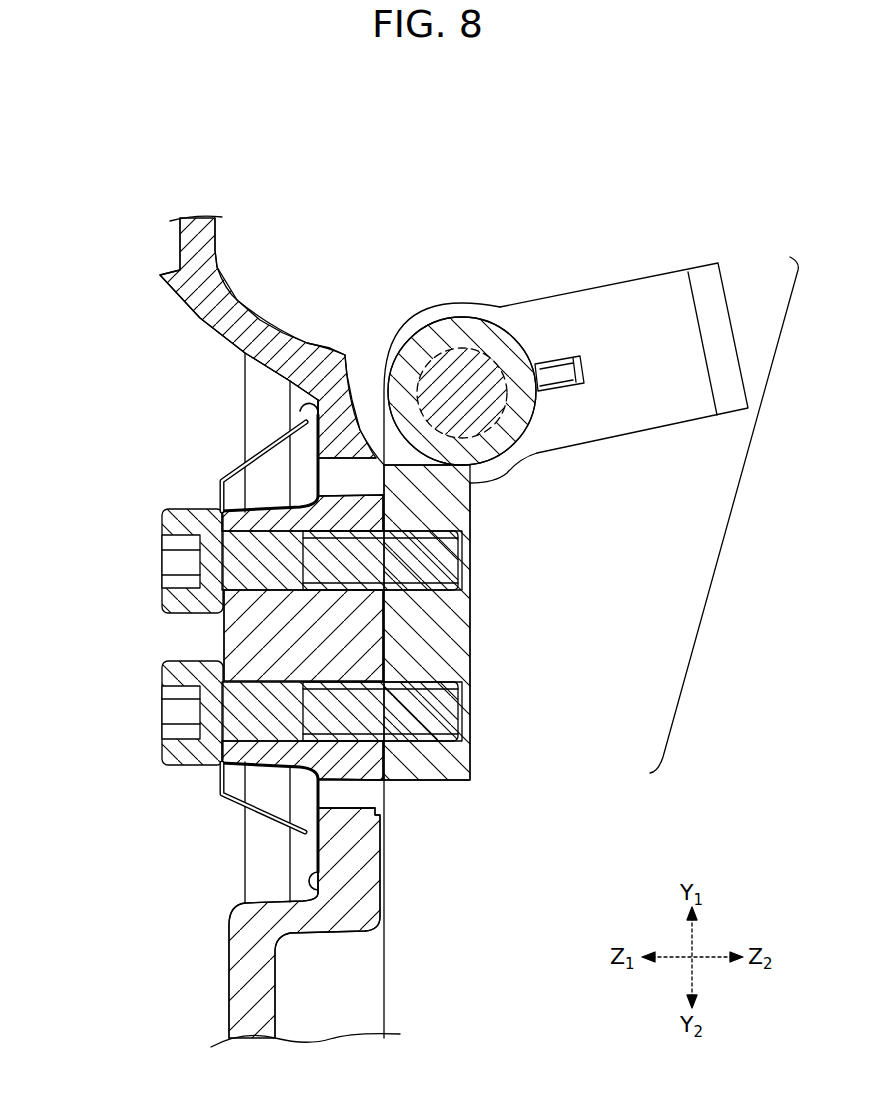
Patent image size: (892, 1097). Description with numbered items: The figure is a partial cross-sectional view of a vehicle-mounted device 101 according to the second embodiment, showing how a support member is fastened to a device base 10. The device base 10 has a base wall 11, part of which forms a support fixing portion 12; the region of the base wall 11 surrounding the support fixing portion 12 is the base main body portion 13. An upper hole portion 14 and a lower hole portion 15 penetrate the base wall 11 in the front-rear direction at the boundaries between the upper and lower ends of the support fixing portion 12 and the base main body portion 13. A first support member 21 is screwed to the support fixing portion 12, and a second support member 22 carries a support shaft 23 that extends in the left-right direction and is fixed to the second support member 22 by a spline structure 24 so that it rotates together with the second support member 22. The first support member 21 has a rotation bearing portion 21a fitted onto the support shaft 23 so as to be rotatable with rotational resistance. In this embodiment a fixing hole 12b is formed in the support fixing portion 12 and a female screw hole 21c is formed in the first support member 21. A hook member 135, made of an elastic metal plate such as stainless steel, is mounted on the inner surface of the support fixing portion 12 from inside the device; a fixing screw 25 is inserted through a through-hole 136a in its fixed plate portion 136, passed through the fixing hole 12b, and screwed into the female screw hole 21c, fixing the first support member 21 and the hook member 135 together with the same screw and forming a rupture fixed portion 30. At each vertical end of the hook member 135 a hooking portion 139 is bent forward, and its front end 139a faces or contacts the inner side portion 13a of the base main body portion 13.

The device base 10 is at (317, 599).
The base wall 11 is at (215, 268).
The support fixing portion 12 is at (390, 654).
The fixing hole 12b is at (357, 518).
The base main body portion 13 is at (335, 423).
The inner side portion 13a is at (305, 390).
The upper hole portion 14 is at (493, 470).
The lower hole portion 15 is at (343, 800).
The first support member 21 is at (525, 515).
The rotation bearing portion 21a is at (413, 355).
The female screw hole 21c is at (455, 562).
The second support member 22 is at (650, 303).
The support shaft 23 is at (465, 363).
The spline structure 24 is at (553, 375).
The fixing screw 25 is at (266, 637).
The rupture fixed portion 30 is at (724, 515).
The vehicle-mounted device 101 is at (414, 174).
The hook member 135 is at (211, 628).
The fixed plate portion 136 is at (269, 637).
The through-hole 136a is at (222, 538).
The hooking portion 139 is at (224, 628).
The front end 139a is at (303, 400).